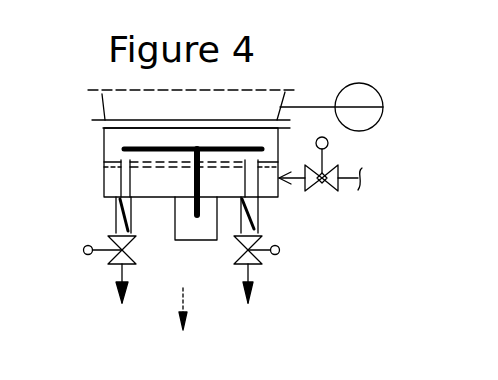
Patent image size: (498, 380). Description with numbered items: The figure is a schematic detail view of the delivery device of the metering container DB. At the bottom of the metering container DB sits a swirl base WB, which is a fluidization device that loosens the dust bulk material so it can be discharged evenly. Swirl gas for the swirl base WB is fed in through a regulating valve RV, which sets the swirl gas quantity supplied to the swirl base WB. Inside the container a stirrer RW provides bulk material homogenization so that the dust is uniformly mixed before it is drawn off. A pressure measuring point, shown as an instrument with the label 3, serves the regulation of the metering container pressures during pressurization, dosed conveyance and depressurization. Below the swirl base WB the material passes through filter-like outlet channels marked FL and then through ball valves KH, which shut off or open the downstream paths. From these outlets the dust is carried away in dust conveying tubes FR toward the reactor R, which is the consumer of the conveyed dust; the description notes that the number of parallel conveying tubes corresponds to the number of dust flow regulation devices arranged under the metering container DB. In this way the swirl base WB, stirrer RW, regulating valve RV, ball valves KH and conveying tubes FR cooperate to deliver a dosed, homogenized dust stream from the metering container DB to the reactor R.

The metering container DB is at (193, 109).
The swirl base WB is at (161, 171).
The filter FL is at (151, 196).
The ball valve KH is at (162, 269).
The stirrer RW is at (196, 234).
The regulating valve RV is at (320, 176).
The pressure indicator 3 is at (331, 96).
The dust conveying tube FR is at (175, 327).
The reactor R is at (213, 347).